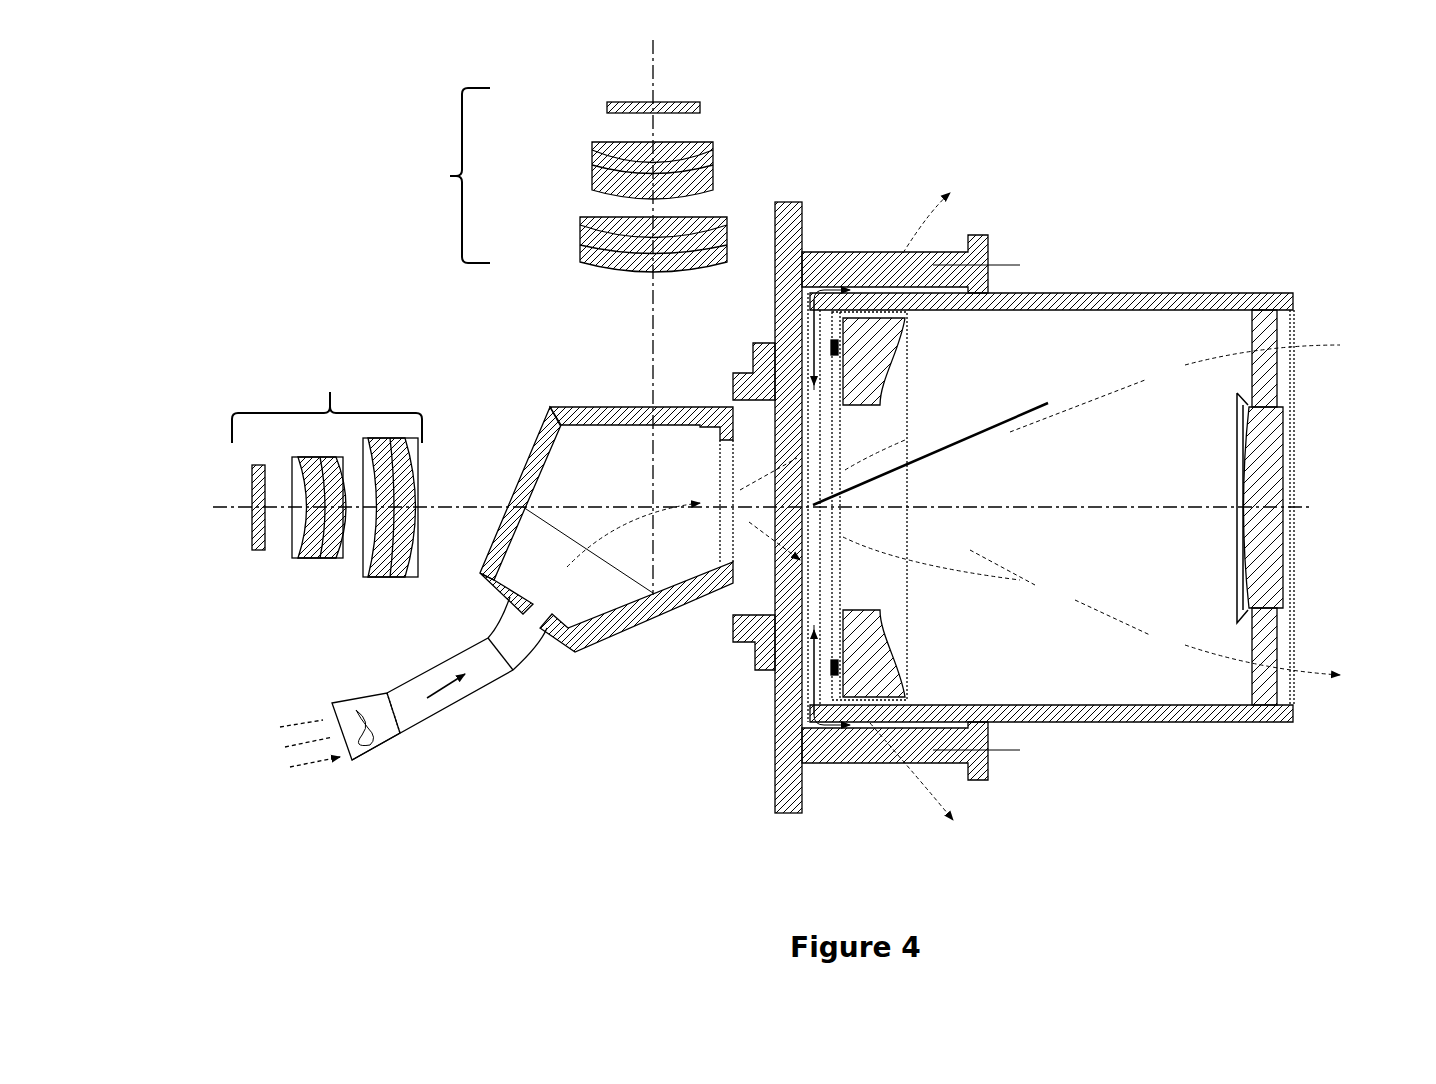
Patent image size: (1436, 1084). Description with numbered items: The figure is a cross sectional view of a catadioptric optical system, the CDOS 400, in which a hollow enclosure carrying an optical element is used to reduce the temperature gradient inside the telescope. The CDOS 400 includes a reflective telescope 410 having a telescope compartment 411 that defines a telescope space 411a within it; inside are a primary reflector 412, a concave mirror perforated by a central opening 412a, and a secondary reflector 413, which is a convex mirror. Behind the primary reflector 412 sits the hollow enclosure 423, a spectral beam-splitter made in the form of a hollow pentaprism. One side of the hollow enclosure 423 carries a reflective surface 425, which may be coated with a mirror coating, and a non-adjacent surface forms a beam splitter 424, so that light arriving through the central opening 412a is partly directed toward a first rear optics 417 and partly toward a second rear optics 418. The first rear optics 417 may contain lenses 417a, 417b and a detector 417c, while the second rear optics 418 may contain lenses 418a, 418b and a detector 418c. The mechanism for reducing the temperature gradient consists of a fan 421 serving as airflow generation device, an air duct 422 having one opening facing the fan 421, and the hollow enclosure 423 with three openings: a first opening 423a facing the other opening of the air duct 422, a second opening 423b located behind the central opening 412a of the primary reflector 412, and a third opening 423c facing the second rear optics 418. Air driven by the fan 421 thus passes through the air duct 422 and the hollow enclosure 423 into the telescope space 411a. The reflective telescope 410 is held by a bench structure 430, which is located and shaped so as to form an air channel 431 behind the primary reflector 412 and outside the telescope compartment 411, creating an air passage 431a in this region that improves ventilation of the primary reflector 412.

The catadioptric optical system 400 is at (1212, 185).
The reflective telescope 410 is at (1300, 403).
The telescope compartment 411 is at (1067, 485).
The telescope space 411a is at (1087, 325).
The primary reflector 412 is at (897, 675).
The central opening 412a is at (878, 425).
The secondary reflector 413 is at (1238, 592).
The first rear optics 417 is at (298, 499).
The lens 417a is at (398, 578).
The lens 417b is at (327, 560).
The detector 417c is at (258, 550).
The second rear optics 418 is at (550, 180).
The lens 418a is at (580, 238).
The lens 418b is at (592, 168).
The detector 418c is at (607, 109).
The fan 421 is at (357, 720).
The air duct 422 is at (452, 705).
The hollow enclosure 423 is at (733, 549).
The first opening 423a is at (543, 592).
The second opening 423b is at (727, 500).
The third opening 423c is at (605, 420).
The beam splitter 424 is at (532, 463).
The reflective surface 425 is at (673, 603).
The bench structure 430 is at (785, 207).
The air channel 431 is at (828, 288).
The air passage 431a is at (810, 387).